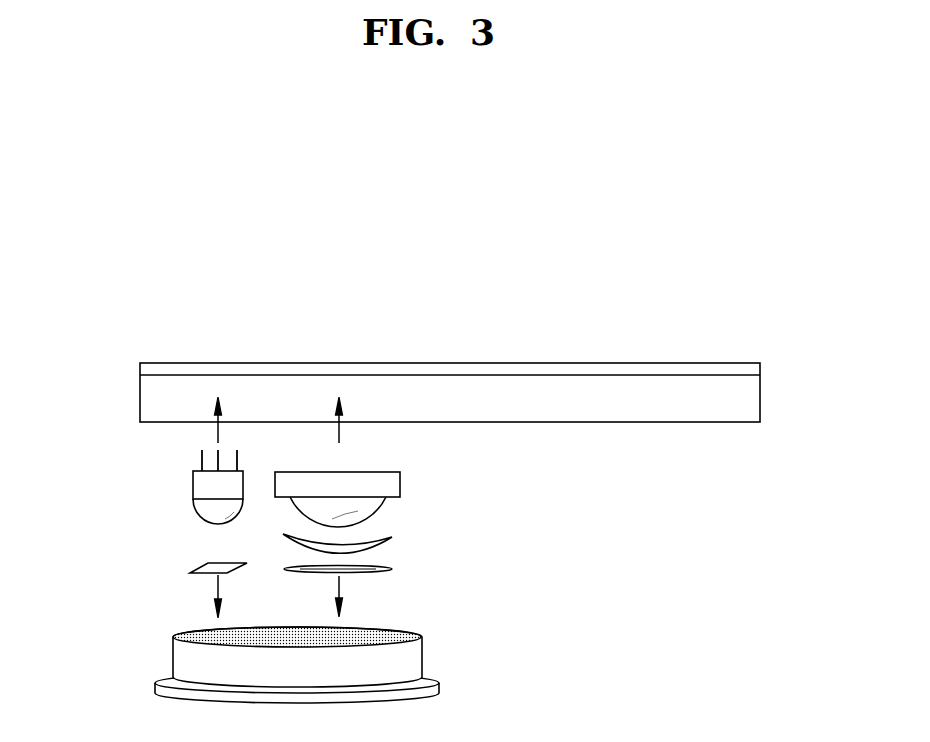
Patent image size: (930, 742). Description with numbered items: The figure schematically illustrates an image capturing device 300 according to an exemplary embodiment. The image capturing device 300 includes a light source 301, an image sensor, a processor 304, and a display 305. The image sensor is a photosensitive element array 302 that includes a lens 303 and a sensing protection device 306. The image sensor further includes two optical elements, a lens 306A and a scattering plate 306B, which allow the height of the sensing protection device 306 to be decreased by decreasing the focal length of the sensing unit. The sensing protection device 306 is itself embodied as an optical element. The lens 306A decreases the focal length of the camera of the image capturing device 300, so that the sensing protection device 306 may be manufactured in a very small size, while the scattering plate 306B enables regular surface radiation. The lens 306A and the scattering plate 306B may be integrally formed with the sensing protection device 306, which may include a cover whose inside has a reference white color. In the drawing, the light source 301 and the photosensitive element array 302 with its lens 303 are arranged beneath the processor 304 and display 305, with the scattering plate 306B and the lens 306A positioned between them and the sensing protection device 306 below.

The image capturing device 300 is at (698, 270).
The light source 301 is at (207, 483).
The photosensitive element array 302 is at (390, 483).
The lens 303 is at (365, 545).
The processor 304 is at (157, 394).
The display 305 is at (208, 370).
The sensing protection device 306 is at (400, 661).
The lens 306A is at (370, 569).
The scattering plate 306B is at (210, 567).